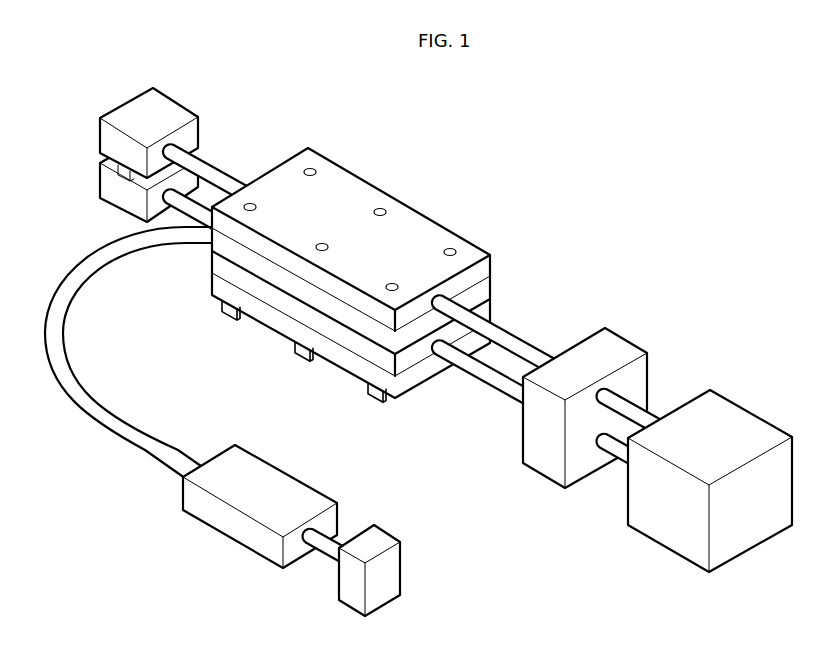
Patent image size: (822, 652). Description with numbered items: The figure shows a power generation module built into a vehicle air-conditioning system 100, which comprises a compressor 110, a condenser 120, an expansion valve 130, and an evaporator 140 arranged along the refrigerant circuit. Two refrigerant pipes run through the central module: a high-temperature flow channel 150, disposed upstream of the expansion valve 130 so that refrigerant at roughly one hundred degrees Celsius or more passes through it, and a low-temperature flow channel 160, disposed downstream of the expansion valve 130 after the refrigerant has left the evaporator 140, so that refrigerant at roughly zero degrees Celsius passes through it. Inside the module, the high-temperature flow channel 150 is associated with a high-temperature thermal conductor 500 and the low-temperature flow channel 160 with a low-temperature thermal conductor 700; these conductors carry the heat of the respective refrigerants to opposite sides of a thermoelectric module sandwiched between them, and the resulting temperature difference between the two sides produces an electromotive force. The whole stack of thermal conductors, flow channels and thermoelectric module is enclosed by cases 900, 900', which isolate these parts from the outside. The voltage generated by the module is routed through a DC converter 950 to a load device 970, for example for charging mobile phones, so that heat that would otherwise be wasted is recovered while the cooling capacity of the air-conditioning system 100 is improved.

The air-conditioning system 100 is at (578, 117).
The compressor 110 is at (108, 142).
The condenser 120 is at (108, 186).
The expansion valve 130 is at (620, 353).
The evaporator 140 is at (738, 427).
The high-temperature flow channel 150 is at (201, 208).
The low-temperature flow channel 160 is at (518, 345).
The high-temperature thermal conductor 500 is at (280, 300).
The low-temperature thermal conductor 700 is at (293, 262).
The case 900 is at (351, 273).
The case 900' is at (351, 355).
The DC converter 950 is at (227, 525).
The load device 970 is at (387, 579).